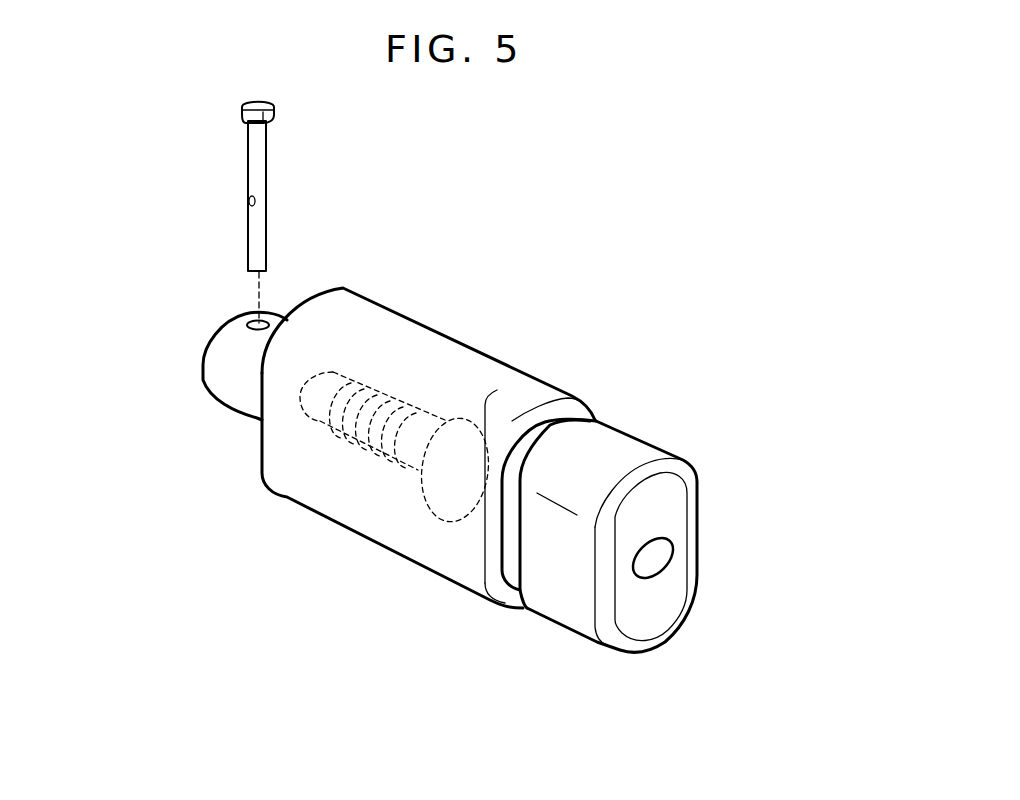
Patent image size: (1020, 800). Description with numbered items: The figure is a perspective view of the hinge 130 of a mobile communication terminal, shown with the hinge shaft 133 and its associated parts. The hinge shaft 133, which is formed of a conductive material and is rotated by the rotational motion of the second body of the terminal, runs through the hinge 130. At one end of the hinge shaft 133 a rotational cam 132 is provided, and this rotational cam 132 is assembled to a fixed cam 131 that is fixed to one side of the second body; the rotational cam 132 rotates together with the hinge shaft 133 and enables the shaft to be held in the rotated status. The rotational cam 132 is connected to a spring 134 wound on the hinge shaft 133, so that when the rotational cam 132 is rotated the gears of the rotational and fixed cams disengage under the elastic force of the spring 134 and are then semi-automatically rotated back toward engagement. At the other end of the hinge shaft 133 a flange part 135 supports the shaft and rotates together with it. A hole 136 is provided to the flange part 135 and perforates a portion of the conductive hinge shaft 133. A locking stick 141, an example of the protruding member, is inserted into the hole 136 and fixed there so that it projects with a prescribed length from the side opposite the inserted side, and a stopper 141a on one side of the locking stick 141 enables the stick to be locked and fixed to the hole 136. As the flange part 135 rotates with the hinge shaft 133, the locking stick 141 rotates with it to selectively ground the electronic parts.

The hinge 130 is at (378, 301).
The fixed cam 131 is at (678, 522).
The rotational cam 132 is at (490, 423).
The hinge shaft 133 is at (338, 382).
The spring 134 is at (363, 447).
The flange part 135 is at (223, 355).
The hole 136 is at (253, 317).
The locking stick 141 is at (252, 160).
The stopper 141a is at (249, 199).